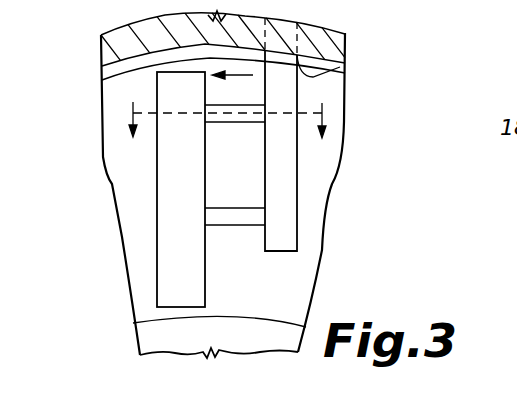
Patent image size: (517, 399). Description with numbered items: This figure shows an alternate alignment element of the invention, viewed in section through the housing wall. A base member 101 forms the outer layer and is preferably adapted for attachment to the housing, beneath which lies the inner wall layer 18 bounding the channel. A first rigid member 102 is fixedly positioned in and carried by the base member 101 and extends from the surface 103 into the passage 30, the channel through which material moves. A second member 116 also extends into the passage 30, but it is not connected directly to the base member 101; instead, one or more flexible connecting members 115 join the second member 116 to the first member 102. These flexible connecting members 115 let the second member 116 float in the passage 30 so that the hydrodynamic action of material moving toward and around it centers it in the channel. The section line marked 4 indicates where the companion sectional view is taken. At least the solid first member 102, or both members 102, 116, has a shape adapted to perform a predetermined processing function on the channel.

The passage 30 is at (303, 283).
The base member 101 is at (99, 50).
The inner layer 18 is at (113, 81).
The surface 103 is at (337, 72).
The second member 116 is at (177, 245).
The first rigid member 102 is at (288, 184).
The flexible connecting member 115 is at (252, 117).
The section line 4- 4 is at (229, 104).